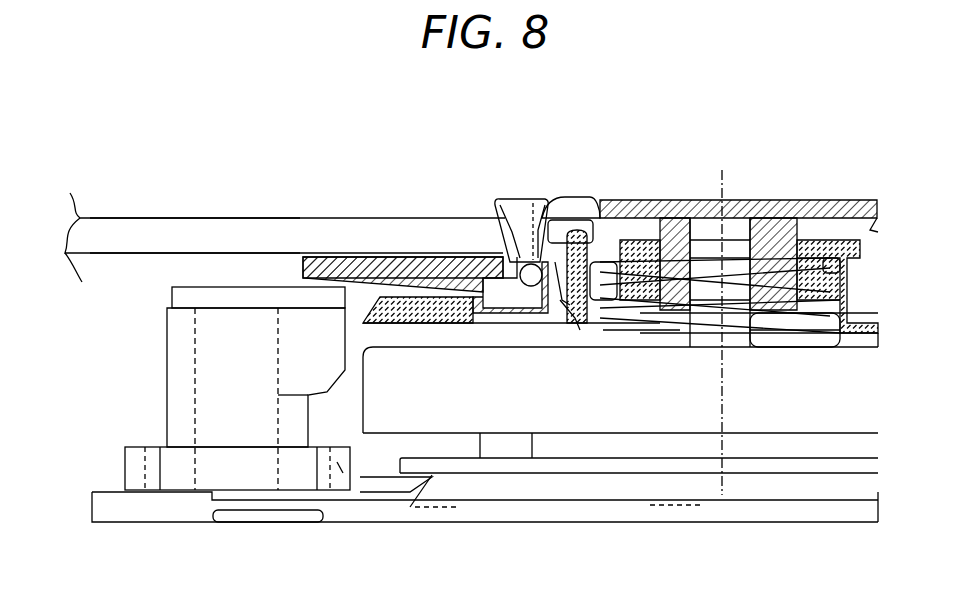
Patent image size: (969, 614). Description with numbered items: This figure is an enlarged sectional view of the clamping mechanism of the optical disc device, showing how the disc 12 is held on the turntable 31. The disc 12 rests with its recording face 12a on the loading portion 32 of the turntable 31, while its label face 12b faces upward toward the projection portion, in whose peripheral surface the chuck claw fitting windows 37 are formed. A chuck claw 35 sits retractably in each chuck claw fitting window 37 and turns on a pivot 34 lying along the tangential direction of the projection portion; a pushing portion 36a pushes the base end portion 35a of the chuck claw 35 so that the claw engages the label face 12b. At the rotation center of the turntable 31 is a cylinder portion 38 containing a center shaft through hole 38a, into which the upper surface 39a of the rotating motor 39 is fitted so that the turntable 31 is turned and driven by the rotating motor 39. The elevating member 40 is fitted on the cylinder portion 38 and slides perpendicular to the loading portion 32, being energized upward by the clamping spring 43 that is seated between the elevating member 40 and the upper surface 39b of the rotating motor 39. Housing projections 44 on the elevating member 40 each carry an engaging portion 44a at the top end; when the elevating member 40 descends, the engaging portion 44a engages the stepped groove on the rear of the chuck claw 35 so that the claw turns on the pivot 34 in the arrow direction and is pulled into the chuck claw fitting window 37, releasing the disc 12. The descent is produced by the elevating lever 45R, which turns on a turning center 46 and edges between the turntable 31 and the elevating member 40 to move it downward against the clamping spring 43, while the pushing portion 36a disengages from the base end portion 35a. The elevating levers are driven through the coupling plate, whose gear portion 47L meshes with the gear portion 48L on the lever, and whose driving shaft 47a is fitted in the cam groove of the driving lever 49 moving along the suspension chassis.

The disc 12 is at (137, 225).
The recording face 12a is at (203, 253).
The label face 12b is at (260, 218).
The loading portion 32 is at (335, 257).
The elevating member 40 is at (403, 297).
The pivot 34 is at (520, 272).
The chuck claw 35 is at (508, 200).
The base end portion 35a is at (565, 292).
The pushing portion 36a is at (547, 300).
The chuck claw fitting window 37 is at (572, 200).
The housing projection 44 is at (577, 243).
The engaging portion 44a is at (566, 300).
The cylinder portion 38 is at (835, 200).
The center shaft through hole 38a is at (698, 207).
The upper surface of rotating motor 39a is at (735, 210).
The turntable 31 is at (785, 185).
The clamping spring 43 is at (803, 345).
The upper surface of rotating motor 39b is at (423, 342).
The rotating motor 39 is at (472, 423).
The driving lever 49 is at (397, 503).
The driving shaft 47a is at (273, 522).
The gear portion 47L is at (357, 488).
The gear portion 48L is at (337, 465).
The elevating lever 45R is at (173, 378).
The turning center 46 is at (217, 307).